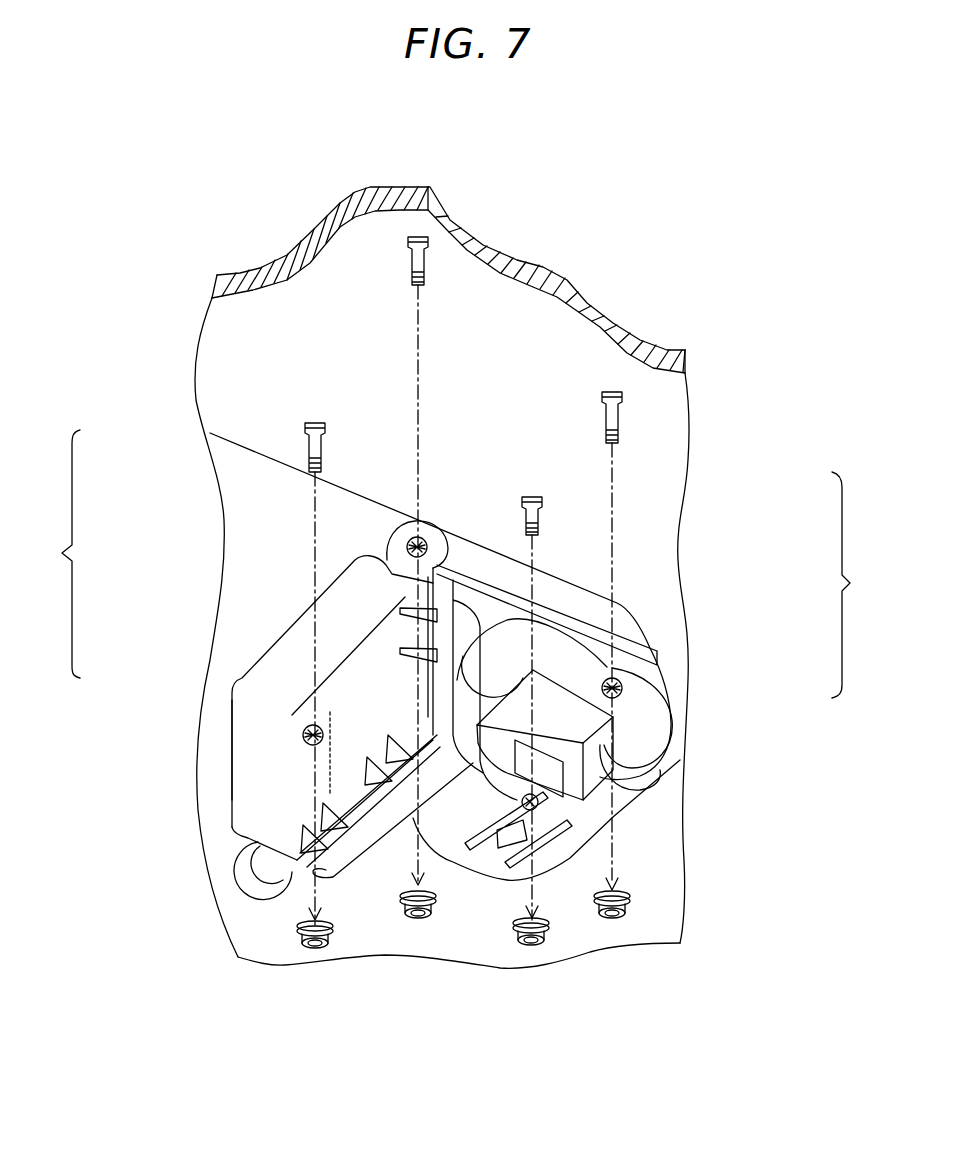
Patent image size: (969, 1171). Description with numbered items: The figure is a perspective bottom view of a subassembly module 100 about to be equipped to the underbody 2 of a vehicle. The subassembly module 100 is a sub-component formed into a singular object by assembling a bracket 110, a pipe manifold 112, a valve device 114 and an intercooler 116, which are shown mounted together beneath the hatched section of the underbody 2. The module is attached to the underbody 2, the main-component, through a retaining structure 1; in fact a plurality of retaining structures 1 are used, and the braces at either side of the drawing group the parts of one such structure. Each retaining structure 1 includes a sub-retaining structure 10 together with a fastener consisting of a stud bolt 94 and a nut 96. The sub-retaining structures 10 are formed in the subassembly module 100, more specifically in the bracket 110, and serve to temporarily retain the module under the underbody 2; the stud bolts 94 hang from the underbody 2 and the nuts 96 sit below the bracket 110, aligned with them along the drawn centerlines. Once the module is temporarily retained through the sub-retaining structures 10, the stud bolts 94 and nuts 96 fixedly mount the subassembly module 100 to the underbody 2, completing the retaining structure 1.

The retaining structure 1 is at (62, 553).
The underbody 2 is at (304, 233).
The sub-retaining structure 10 is at (405, 546).
The stud bolt 94 is at (410, 267).
The nut 96 is at (400, 913).
The subassembly module 100 is at (283, 610).
The bracket 110 is at (665, 681).
The pipe manifold 112 is at (657, 743).
The valve device 114 is at (248, 728).
The intercooler 116 is at (590, 805).